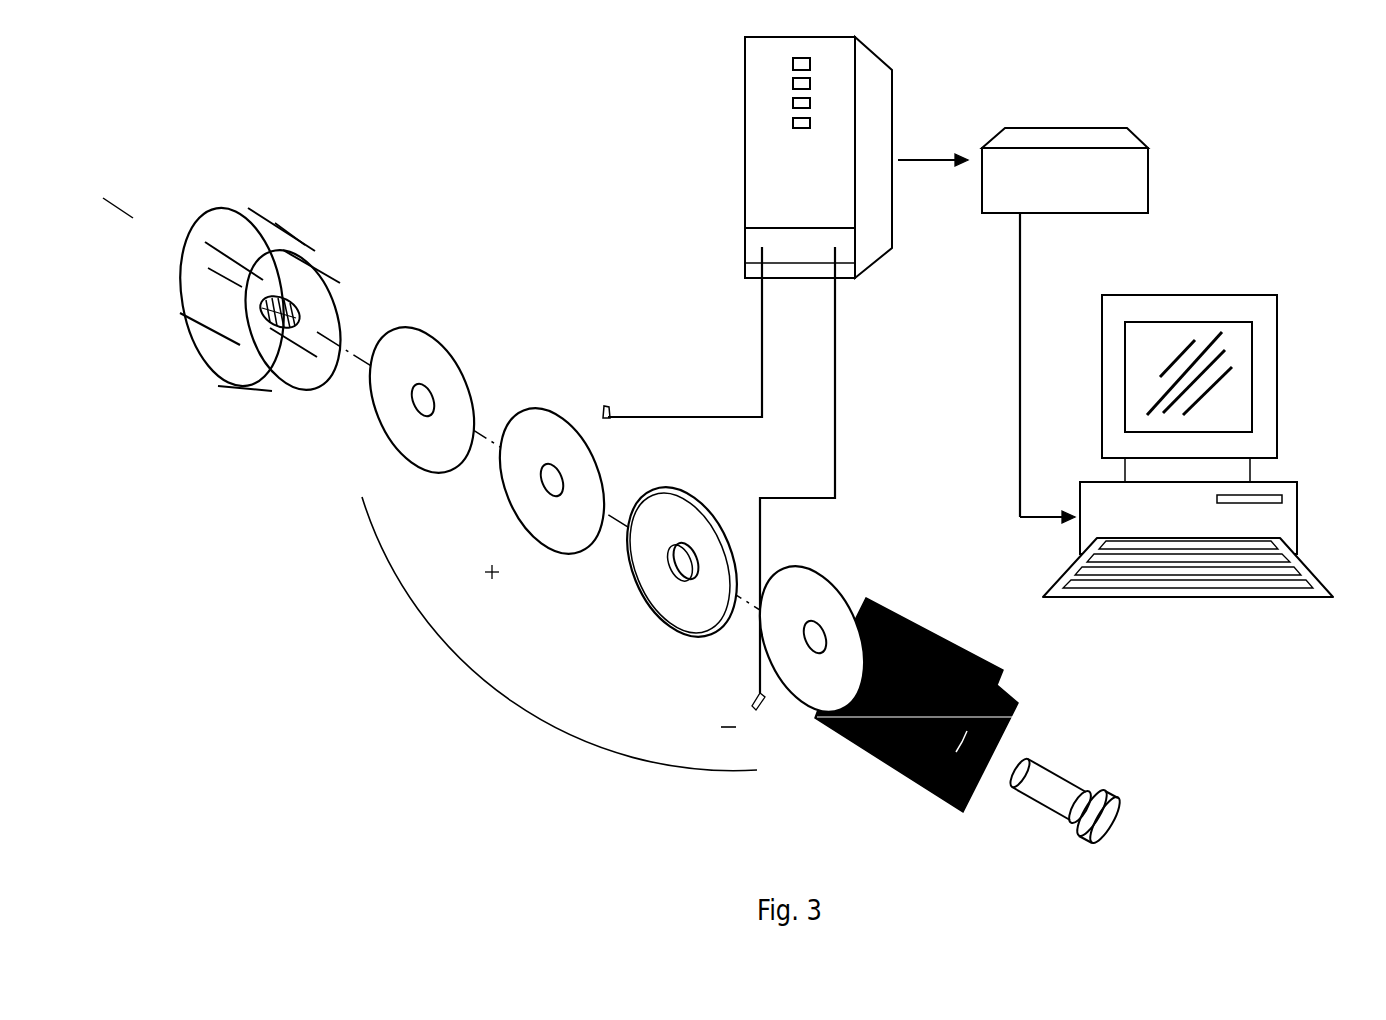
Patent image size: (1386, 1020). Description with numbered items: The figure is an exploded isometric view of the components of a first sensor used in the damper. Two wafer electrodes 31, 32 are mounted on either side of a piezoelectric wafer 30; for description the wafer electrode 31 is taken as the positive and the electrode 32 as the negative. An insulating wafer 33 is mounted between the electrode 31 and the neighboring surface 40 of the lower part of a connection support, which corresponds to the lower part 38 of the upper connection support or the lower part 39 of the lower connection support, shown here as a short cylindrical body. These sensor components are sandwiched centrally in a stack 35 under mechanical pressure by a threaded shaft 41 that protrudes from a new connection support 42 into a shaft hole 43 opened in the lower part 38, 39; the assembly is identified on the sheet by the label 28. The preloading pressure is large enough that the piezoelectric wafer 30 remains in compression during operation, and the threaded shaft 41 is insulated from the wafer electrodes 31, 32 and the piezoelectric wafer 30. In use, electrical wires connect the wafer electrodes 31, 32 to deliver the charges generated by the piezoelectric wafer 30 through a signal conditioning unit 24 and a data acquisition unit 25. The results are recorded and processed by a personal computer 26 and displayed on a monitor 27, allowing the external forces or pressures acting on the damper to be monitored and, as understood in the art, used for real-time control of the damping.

The signal conditioning unit 24 is at (767, 127).
The data acquisition unit 25 is at (1148, 172).
The personal computer 26 is at (1263, 513).
The monitor 27 is at (1263, 345).
The ion source assembly 28-(1) 28 is at (614, 490).
The piezoelectric wafer 30 is at (737, 493).
The wafer electrode 31 is at (613, 405).
The wafer electrode 32 is at (855, 575).
The insulating wafer 33 is at (480, 338).
The stack 35 is at (559, 634).
The lower part of the upper connection support 38 is at (281, 293).
The lower part of the lower connection support 39 is at (287, 326).
The neighboring surface 40 is at (263, 357).
The threaded shaft 41 is at (1070, 748).
The new connection support 42 is at (938, 610).
The shaft hole 43 is at (308, 327).